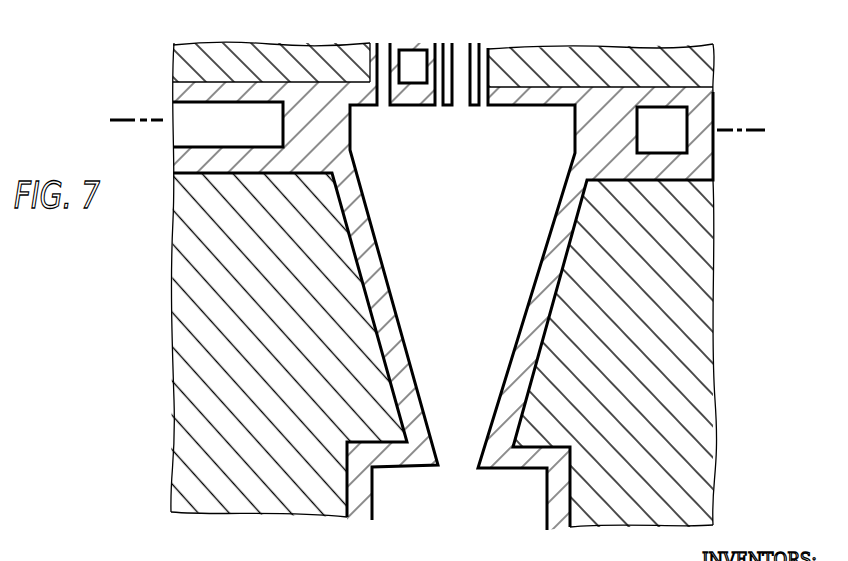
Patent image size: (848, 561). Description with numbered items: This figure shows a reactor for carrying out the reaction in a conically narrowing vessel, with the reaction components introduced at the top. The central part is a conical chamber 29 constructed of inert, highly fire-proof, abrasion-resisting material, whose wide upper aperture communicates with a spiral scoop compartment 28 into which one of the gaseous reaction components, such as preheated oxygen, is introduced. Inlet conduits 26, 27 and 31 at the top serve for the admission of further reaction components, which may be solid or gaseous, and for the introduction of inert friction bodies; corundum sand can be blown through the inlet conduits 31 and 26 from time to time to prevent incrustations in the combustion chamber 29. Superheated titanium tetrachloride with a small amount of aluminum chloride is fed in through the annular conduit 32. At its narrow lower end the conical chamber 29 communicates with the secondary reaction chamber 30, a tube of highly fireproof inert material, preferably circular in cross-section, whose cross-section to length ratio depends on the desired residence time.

The inlet conduit 26 is at (462, 60).
The inlet conduit 27 is at (440, 45).
The spiral scoop compartment 28 is at (190, 120).
The conical chamber 29 is at (493, 325).
The secondary reaction chamber 30 is at (445, 505).
The inlet conduit 31 is at (387, 43).
The annular conduit 32 is at (673, 125).